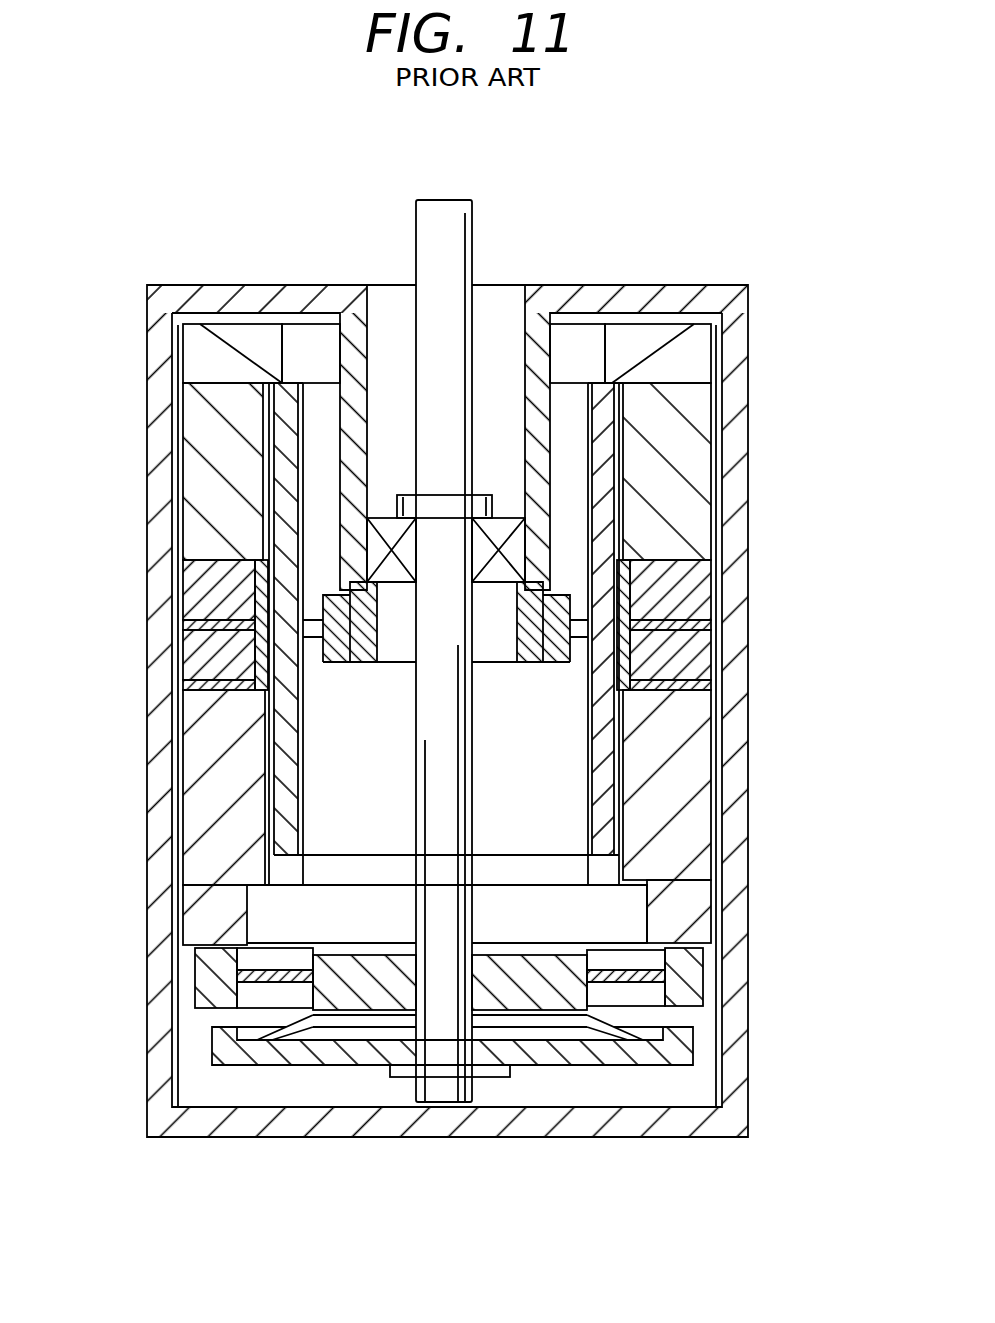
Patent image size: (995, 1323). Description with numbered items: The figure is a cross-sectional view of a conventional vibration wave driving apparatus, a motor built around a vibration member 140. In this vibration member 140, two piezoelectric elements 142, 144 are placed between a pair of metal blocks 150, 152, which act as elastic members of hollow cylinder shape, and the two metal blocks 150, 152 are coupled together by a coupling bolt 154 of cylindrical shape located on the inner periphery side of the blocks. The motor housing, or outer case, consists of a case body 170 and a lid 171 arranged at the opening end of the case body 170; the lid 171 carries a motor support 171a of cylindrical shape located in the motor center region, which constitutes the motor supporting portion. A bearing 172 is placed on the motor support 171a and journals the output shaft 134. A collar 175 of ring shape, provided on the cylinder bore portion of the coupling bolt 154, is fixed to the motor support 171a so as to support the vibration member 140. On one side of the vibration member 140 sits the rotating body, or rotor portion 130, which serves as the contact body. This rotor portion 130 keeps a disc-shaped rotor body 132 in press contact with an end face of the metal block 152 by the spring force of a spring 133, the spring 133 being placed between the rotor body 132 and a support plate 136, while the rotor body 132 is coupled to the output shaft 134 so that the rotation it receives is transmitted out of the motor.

The rotating body 130 is at (555, 992).
The rotor body 132 is at (695, 972).
The spring 133 is at (690, 1018).
The output shaft 134 is at (472, 203).
The support plate 136 is at (695, 1053).
The vibration member 140 is at (765, 378).
The piezoelectric element 142 is at (705, 587).
The piezoelectric element 144 is at (705, 652).
The metal block 150 is at (687, 478).
The metal block 152 is at (697, 863).
The coupling bolt 154 is at (625, 760).
The case body 170 is at (162, 1047).
The lid 171 is at (652, 285).
The motor support 171a is at (336, 285).
The bearing 172 is at (378, 545).
The collar 175 is at (337, 657).